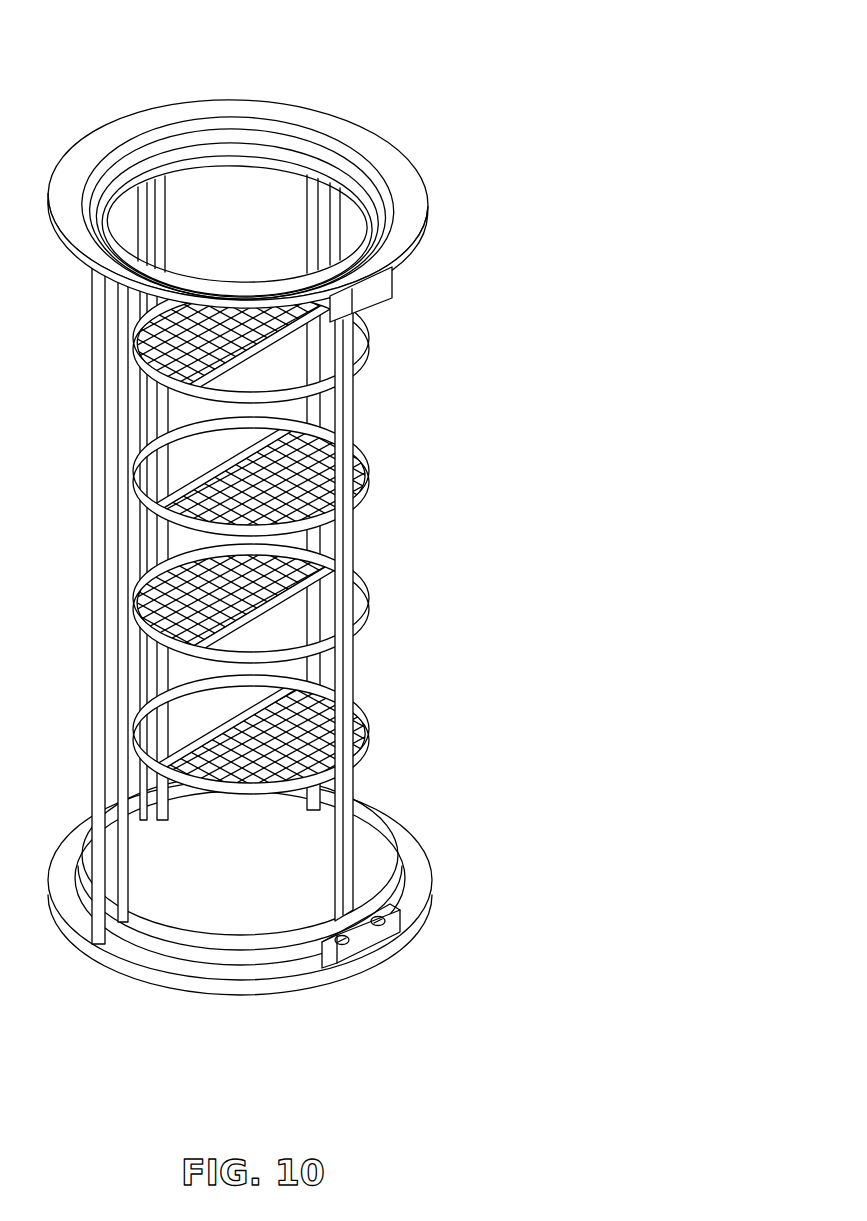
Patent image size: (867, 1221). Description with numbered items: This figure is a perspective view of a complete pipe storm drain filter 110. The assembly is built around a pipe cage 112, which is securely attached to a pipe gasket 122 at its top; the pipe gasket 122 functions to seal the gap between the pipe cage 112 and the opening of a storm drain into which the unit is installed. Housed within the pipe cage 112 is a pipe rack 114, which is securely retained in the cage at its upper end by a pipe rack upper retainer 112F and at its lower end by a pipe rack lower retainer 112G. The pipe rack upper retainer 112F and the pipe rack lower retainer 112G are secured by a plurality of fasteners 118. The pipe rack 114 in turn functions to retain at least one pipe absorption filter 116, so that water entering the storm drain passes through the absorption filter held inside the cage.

The pipe storm drain filter 110 is at (211, 35).
The pipe cage 112 is at (336, 153).
The pipe rack upper retainer 112F is at (380, 298).
The pipe rack lower retainer 112G is at (365, 934).
The pipe rack 114 is at (372, 198).
The pipe absorption filter 116 is at (268, 370).
The fasteners 118 is at (372, 310).
The pipe gasket 122 is at (287, 176).